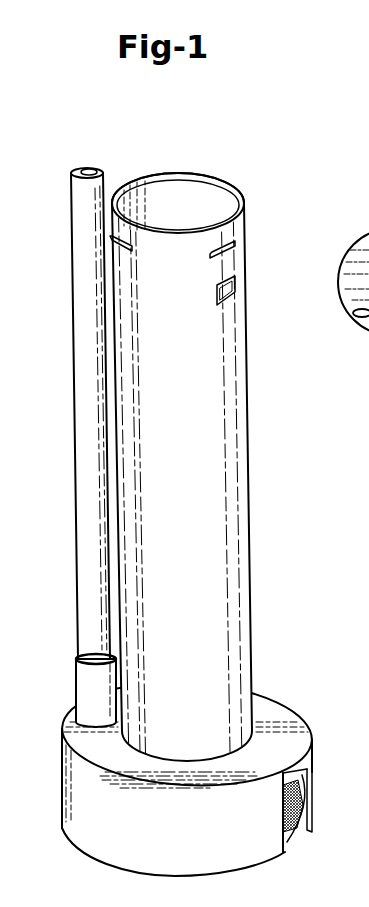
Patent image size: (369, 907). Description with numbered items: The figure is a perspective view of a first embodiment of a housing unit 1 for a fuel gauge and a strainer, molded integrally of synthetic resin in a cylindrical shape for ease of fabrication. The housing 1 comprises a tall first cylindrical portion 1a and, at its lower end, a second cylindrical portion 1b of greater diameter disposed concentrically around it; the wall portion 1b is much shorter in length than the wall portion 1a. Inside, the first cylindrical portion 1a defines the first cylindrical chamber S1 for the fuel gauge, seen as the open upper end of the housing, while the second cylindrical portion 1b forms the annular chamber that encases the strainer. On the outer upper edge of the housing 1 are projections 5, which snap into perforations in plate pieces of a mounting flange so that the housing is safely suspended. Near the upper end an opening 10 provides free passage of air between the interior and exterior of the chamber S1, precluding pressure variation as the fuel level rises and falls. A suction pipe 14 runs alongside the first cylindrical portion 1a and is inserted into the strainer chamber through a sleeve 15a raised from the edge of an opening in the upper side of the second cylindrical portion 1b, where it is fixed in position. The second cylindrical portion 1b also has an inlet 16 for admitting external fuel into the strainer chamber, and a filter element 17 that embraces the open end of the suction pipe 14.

The housing unit 1 is at (204, 467).
The first cylindrical portion 1a is at (238, 477).
The second cylindrical portion 1b is at (278, 713).
The first cylindrical chamber S1 is at (187, 207).
The projections 5 is at (213, 256).
The opening 10 is at (228, 288).
The suction pipe 14 is at (92, 579).
The sleeve 15a is at (85, 682).
The inlet 16 is at (302, 812).
The filter element 17 is at (293, 827).